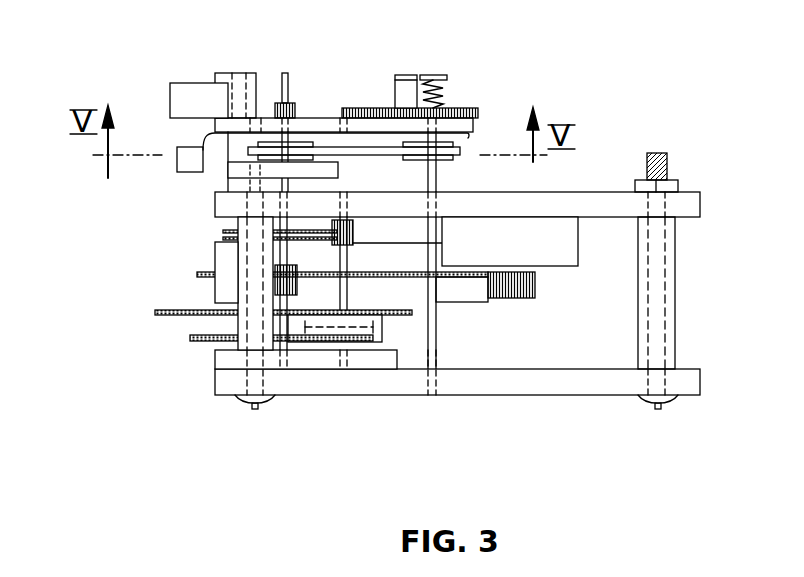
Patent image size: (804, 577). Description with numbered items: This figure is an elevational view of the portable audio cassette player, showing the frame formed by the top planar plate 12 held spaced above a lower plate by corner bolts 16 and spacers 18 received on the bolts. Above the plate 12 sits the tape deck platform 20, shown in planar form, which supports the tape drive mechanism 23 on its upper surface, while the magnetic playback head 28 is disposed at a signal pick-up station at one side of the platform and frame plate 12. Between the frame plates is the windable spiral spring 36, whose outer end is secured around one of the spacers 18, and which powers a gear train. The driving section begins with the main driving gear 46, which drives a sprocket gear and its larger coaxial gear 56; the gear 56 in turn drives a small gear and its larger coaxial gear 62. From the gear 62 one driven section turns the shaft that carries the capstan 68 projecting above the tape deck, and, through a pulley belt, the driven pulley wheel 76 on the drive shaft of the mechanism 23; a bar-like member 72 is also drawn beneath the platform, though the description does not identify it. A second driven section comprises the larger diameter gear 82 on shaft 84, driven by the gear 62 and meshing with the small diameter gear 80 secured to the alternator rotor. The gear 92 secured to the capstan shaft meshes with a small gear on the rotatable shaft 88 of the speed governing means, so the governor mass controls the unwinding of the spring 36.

The top planar plate 12 is at (692, 205).
The corner bolts 16 is at (247, 407).
The spacers 18 is at (667, 290).
The tape deck platform 20 is at (320, 125).
The tape drive mechanism 23 is at (468, 106).
The magnetic playback head 28 is at (193, 90).
The spiral spring 36 is at (220, 252).
The main driving gear 46 is at (157, 310).
The larger diameter coaxial gear 56 is at (190, 335).
The larger diameter coaxial gear 62 is at (193, 270).
The capstan 68 is at (290, 88).
The bar 72 is at (338, 170).
The driven pulley wheel 76 is at (468, 138).
The small diameter gear 80 is at (535, 285).
The larger diameter gear 82 is at (472, 295).
The shaft 84 is at (432, 345).
The rotatable shaft 88 is at (342, 290).
The gear 92 is at (227, 232).